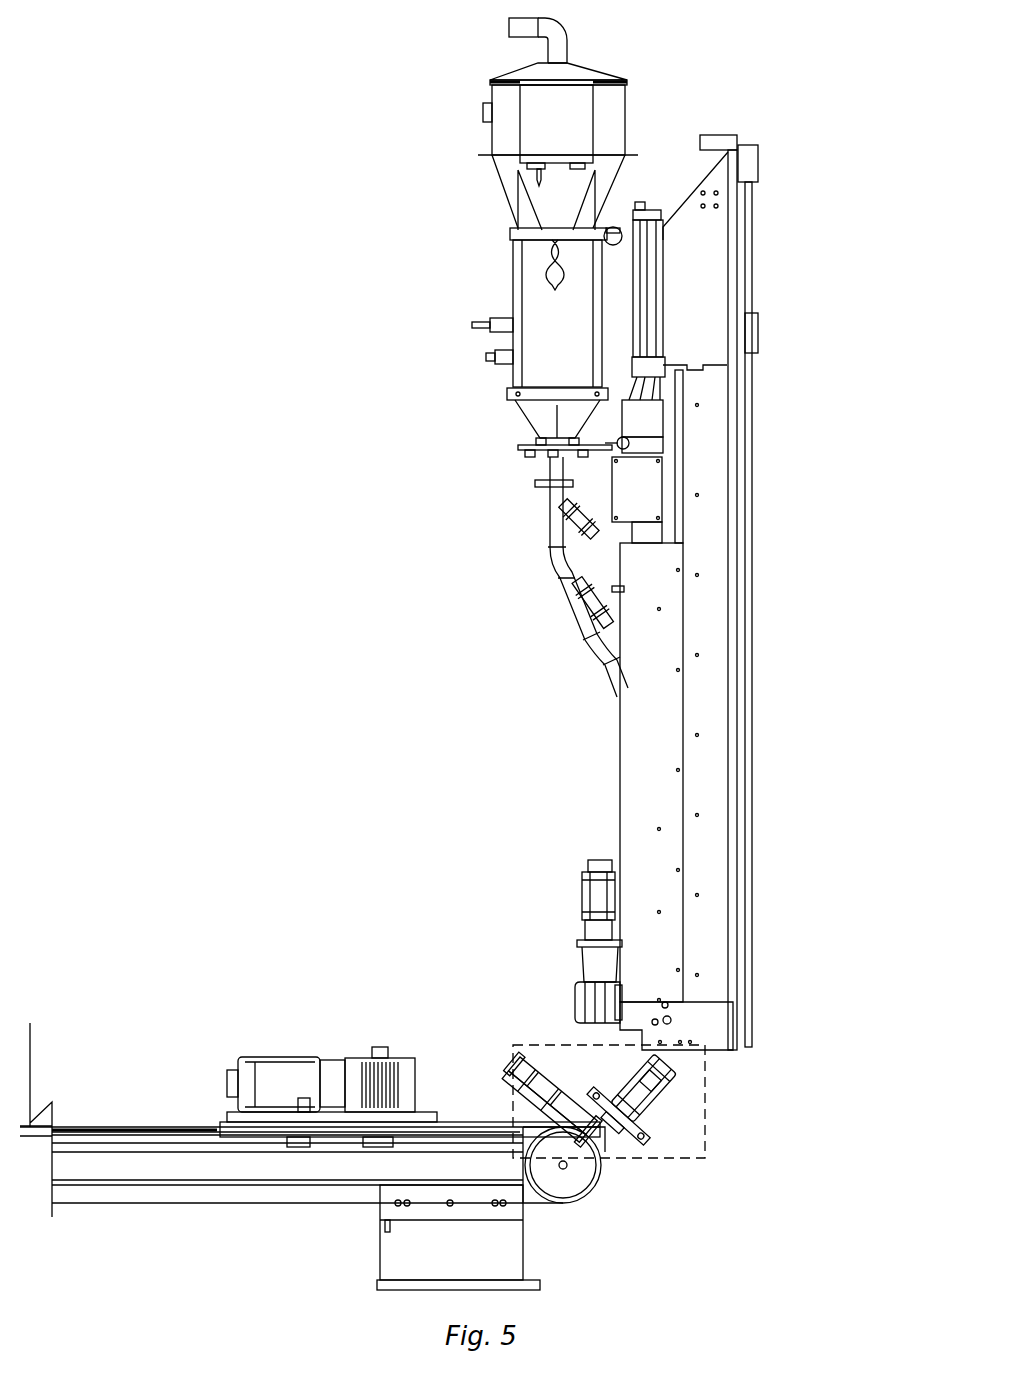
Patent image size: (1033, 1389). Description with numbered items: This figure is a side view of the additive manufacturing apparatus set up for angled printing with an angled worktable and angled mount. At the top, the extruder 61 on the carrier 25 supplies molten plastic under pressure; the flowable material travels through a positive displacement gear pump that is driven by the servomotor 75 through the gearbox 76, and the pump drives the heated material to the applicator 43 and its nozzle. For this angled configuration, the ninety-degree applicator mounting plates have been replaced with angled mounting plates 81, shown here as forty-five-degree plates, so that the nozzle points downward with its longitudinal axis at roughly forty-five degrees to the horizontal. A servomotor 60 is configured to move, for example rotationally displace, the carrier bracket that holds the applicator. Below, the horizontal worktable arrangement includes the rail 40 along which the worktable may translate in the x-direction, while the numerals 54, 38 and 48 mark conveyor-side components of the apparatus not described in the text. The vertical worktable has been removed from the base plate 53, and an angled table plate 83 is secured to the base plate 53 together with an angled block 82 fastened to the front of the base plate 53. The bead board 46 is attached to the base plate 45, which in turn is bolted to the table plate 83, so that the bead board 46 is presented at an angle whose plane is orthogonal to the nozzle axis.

The carrier 25 is at (824, 550).
The extruder 61 is at (646, 494).
The servomotor 75 is at (600, 860).
The gearbox 76 is at (573, 1007).
The bead board 46 is at (537, 1057).
The base plate 45 is at (527, 1063).
The table plate 83 is at (518, 1063).
The angled block 82 is at (523, 1087).
The conveyor drive motor 54 is at (306, 1098).
The rail 40 is at (203, 1133).
The conveyor belt 38 is at (310, 1094).
The transport surface 48 is at (160, 1123).
The base plate 53 is at (437, 1120).
The angled mounting plates 81 is at (680, 1055).
The servomotor 60 is at (663, 1105).
The vertically-oriented applicator 43 is at (657, 1150).